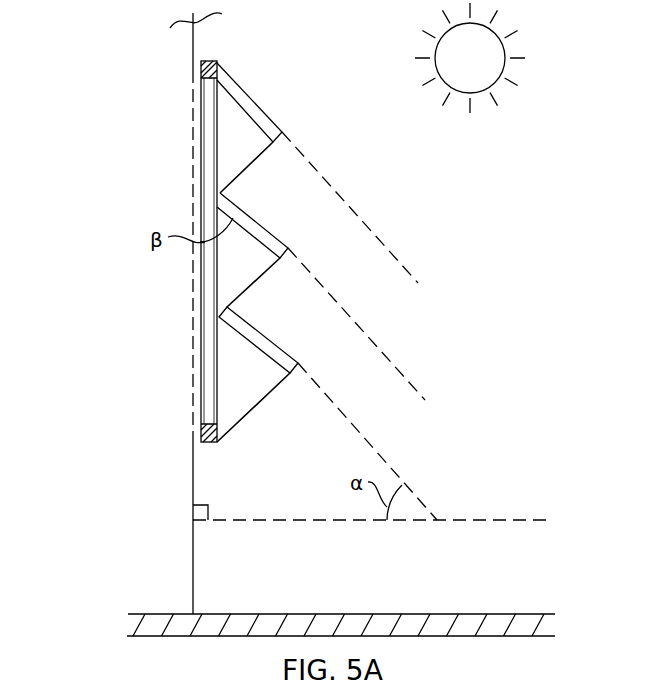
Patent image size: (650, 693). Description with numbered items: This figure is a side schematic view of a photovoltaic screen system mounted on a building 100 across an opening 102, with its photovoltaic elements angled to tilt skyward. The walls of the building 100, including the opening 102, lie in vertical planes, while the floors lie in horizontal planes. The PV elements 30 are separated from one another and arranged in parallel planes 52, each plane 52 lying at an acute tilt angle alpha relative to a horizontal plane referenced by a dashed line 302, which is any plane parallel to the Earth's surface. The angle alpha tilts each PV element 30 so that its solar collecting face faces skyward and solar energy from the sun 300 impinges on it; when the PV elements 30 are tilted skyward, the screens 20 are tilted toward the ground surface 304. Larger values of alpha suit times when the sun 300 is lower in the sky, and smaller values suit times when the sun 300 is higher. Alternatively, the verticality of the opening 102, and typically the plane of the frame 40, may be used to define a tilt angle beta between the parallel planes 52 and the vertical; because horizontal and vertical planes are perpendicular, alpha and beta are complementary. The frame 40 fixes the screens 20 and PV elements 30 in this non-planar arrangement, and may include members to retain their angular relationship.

The building 100 is at (193, 49).
The opening 102 is at (193, 157).
The frame 40 is at (202, 77).
The PV element 30 is at (253, 105).
The screen 20 is at (248, 168).
The parallel planes 52 is at (406, 266).
The horizontal plane 302 is at (515, 519).
The ground surface 304 is at (283, 614).
The sun 300 is at (504, 68).